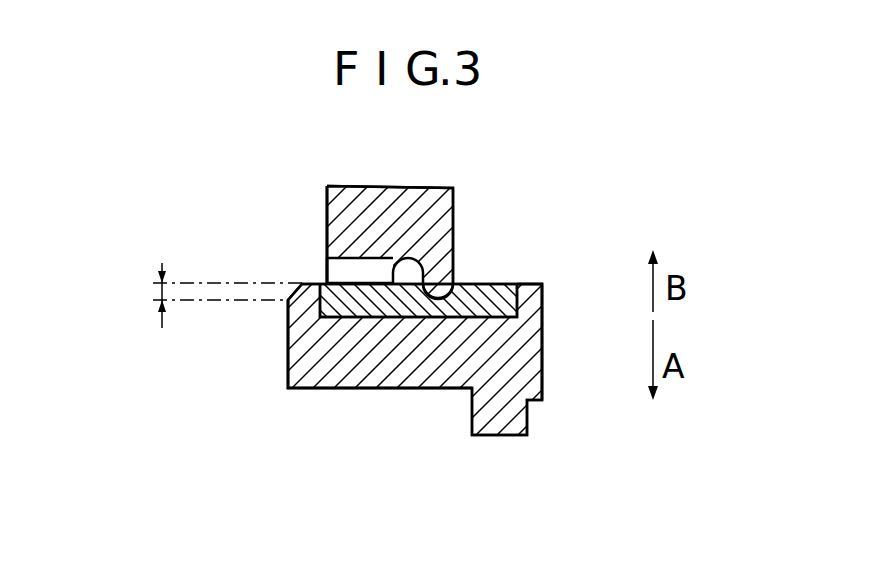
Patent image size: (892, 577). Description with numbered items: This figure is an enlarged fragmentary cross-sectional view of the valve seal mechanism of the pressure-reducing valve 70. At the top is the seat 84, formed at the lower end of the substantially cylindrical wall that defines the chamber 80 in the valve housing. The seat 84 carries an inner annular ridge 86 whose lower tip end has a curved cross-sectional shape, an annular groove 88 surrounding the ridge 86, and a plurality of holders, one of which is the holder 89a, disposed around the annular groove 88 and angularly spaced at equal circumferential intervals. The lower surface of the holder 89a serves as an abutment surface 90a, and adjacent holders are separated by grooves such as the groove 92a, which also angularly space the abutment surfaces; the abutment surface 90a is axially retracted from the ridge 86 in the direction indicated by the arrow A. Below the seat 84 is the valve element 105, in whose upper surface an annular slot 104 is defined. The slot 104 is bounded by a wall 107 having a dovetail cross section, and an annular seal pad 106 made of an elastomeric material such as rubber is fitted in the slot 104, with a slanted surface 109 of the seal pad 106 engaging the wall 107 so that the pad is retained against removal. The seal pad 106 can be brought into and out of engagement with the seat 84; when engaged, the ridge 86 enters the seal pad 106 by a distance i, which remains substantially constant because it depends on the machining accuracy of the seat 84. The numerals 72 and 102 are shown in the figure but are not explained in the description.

The pressure-reducing valve 70 is at (582, 188).
The gap / clearance 72 is at (167, 227).
The chamber 80 is at (558, 173).
The seat 84 is at (325, 221).
The inner annular ridge 86 is at (432, 188).
The annular groove 88 is at (432, 280).
The holder 89a is at (342, 268).
The abutment surface 90a is at (335, 270).
The groove 92a is at (370, 268).
The base body 102 is at (388, 392).
The annular slot 104 is at (463, 318).
The valve element 105 is at (355, 353).
The annular seal pad 106 is at (432, 300).
The wall 107 is at (520, 286).
The slanted surface 109 is at (478, 288).